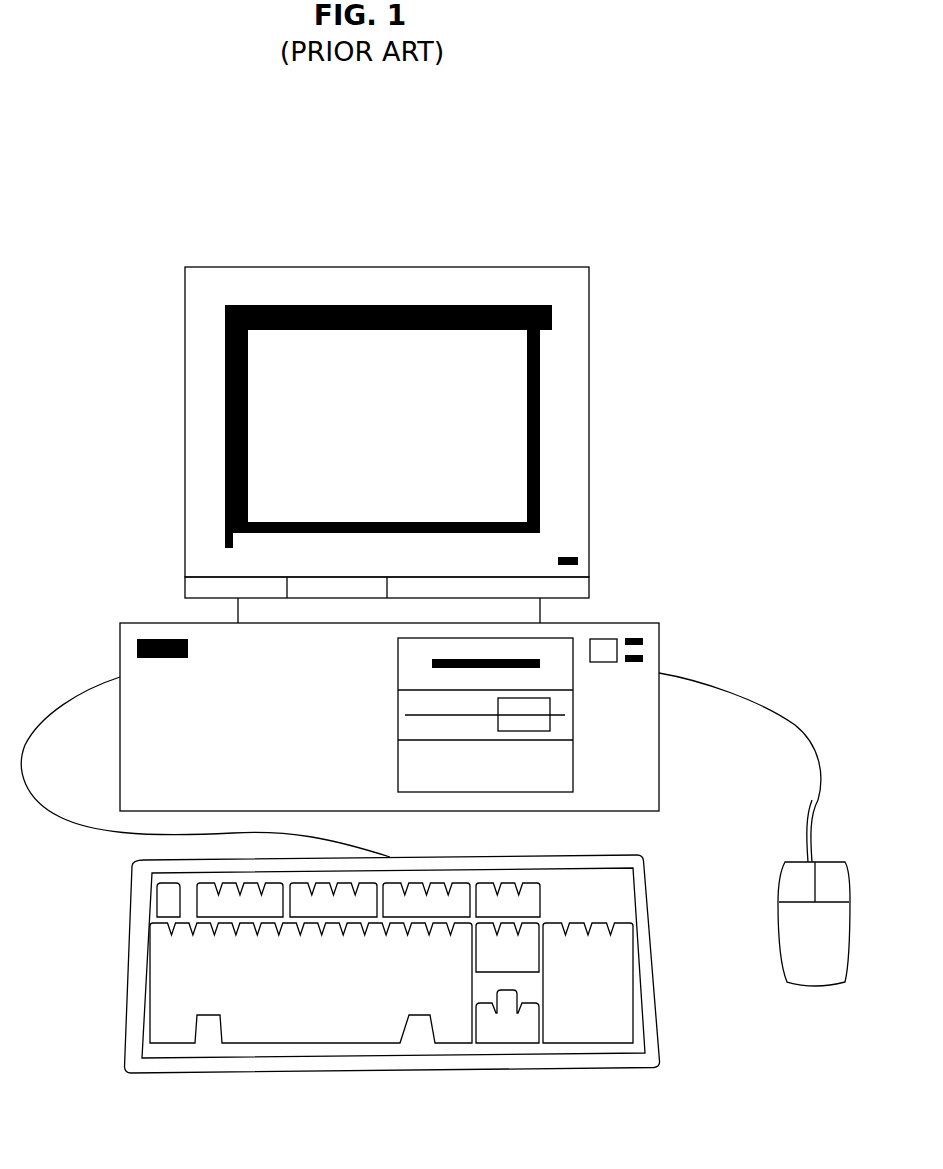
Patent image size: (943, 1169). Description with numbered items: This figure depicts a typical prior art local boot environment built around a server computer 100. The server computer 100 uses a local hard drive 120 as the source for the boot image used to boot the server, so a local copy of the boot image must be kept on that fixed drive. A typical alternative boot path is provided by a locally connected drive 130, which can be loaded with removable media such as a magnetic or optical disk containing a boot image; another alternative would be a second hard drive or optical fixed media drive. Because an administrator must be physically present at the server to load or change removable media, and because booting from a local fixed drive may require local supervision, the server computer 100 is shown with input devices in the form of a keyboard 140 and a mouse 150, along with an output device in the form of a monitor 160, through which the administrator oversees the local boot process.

The server computer 100 is at (803, 332).
The local hard drive 120 is at (389, 717).
The locally connected drive 130 is at (398, 672).
The keyboard 140 is at (390, 1070).
The mouse 150 is at (815, 988).
The monitor 160 is at (185, 403).